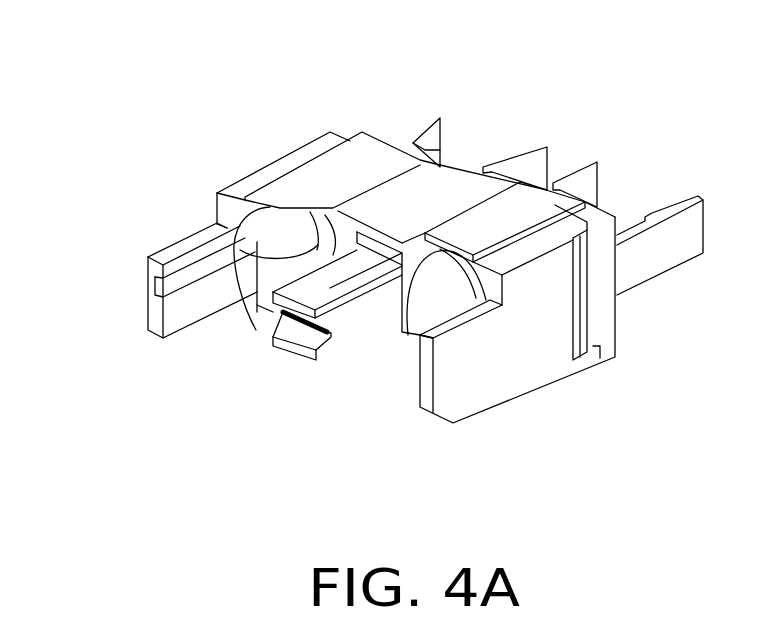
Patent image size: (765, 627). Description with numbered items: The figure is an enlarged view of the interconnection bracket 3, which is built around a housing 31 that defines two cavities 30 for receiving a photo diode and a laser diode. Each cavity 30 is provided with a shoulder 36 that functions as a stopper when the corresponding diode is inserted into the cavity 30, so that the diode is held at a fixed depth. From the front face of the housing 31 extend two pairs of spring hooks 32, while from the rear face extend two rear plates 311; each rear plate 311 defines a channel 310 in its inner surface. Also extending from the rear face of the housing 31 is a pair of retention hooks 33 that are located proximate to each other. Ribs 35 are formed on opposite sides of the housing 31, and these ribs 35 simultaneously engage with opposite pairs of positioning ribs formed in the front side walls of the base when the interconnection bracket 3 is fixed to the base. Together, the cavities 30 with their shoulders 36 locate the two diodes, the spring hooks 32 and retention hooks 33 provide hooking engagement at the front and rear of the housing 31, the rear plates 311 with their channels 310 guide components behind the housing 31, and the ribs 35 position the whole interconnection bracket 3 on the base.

The interconnection bracket 3 is at (296, 131).
The cavity 30 is at (272, 272).
The housing 31 is at (540, 345).
The channel 310 is at (417, 368).
The rear plate 311 is at (468, 380).
The spring hook 32 is at (442, 122).
The retention hook 33 is at (305, 337).
The rib 35 is at (587, 283).
The shoulder 36 is at (212, 230).